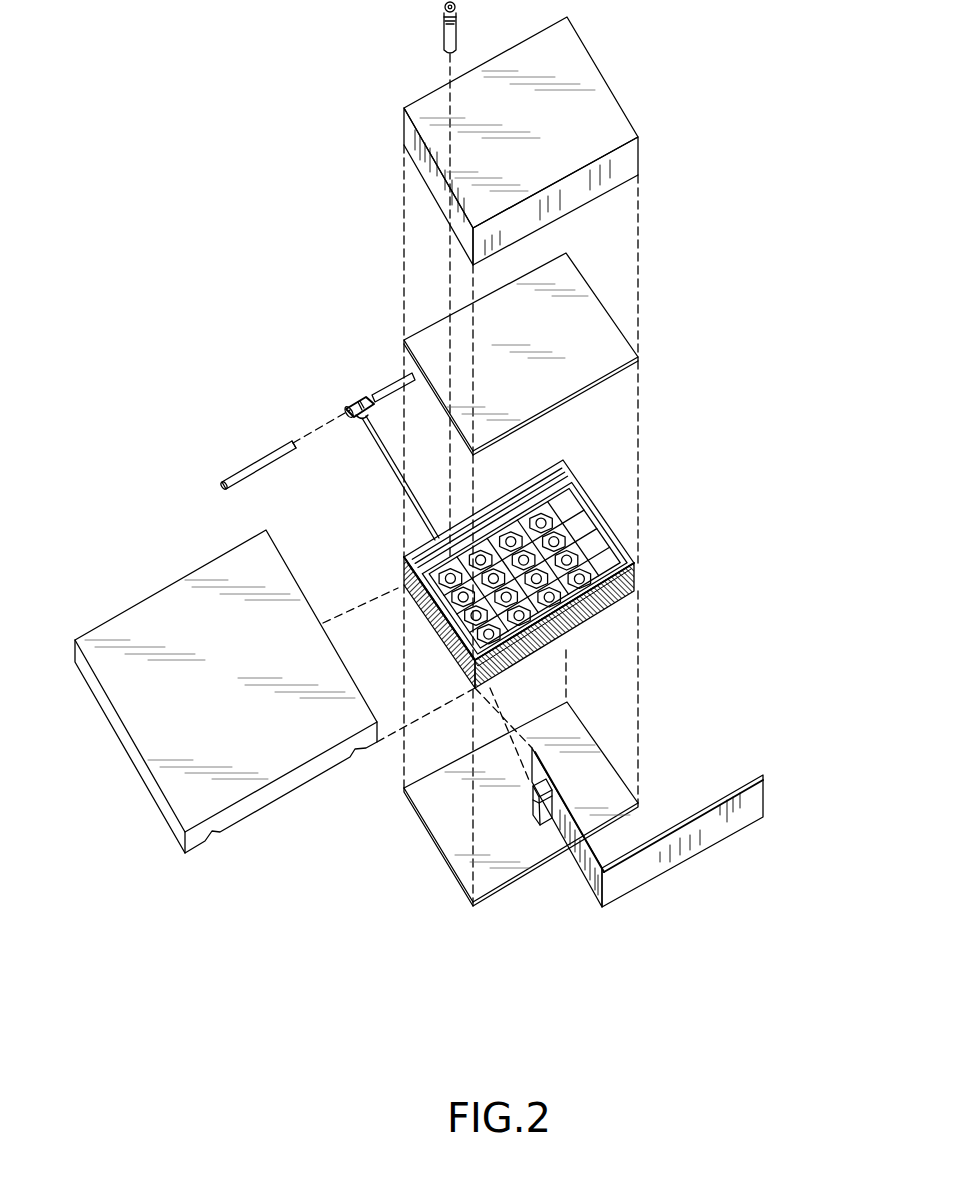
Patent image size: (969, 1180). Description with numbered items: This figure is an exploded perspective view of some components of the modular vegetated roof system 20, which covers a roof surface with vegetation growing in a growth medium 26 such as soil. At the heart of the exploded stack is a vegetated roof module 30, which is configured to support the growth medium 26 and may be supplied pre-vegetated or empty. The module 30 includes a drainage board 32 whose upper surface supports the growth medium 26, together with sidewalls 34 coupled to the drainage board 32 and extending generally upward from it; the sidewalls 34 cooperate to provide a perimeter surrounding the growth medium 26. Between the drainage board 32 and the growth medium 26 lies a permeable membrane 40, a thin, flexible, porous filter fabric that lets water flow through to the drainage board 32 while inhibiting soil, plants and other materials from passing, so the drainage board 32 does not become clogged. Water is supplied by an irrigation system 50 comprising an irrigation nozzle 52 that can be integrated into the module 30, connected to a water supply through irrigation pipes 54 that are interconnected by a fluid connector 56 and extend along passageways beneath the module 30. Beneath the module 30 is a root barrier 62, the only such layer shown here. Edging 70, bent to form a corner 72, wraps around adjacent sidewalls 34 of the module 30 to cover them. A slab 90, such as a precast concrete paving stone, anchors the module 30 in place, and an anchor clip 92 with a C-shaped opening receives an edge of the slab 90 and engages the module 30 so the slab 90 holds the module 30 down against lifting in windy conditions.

The modular vegetated roof system 20 is at (226, 135).
The growth medium 26 is at (586, 64).
The vegetated roof module 30 is at (543, 566).
The drainage board 32 is at (578, 548).
The sidewalls 34 is at (625, 541).
The permeable membrane 40 is at (597, 318).
The irrigation system 50 is at (313, 410).
The irrigation nozzle 52 is at (444, 35).
The irrigation pipe 54 is at (235, 475).
The fluid connector 56 is at (352, 398).
The root barrier 62 is at (430, 808).
The edging 70 is at (680, 840).
The corner 72 is at (592, 885).
The slab 90 is at (157, 716).
The anchor clip 92 is at (535, 810).